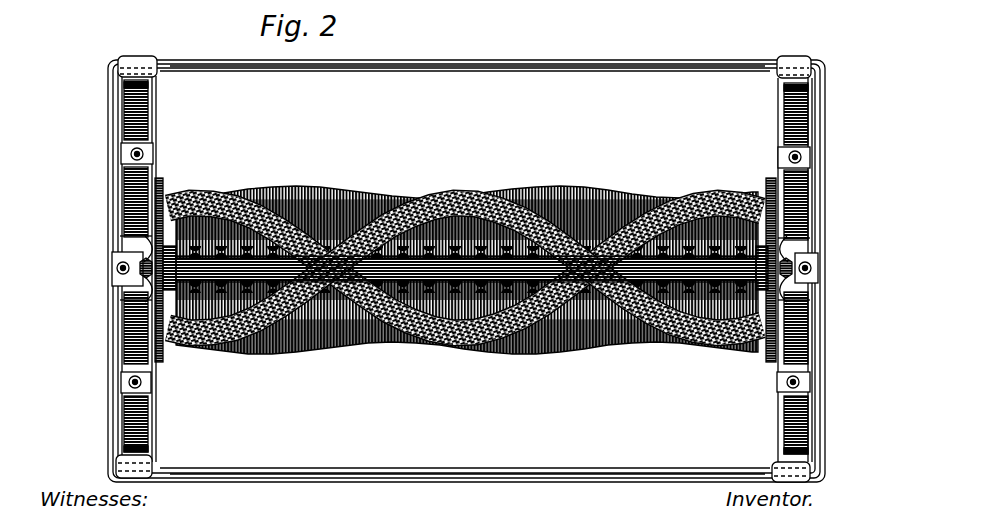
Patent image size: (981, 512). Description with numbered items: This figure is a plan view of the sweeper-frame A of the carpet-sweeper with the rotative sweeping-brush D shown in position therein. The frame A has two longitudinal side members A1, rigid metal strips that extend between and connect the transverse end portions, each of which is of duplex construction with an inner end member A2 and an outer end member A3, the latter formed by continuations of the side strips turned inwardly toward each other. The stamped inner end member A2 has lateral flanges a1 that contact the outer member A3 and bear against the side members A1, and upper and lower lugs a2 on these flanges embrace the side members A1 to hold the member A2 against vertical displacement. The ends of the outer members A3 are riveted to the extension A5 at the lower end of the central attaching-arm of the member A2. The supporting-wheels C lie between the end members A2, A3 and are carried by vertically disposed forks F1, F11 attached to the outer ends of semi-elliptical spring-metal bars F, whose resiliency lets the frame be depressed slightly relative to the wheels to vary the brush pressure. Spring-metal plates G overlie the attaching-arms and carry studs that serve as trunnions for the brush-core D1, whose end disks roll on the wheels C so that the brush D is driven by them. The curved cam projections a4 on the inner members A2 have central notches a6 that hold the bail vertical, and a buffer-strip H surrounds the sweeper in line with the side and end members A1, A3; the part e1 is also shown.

The metal frame A is at (466, 258).
The buffer-strip H is at (405, 60).
The longitudinal side member A1 is at (527, 71).
The inner end member A2 is at (154, 153).
The outer end member A3 is at (120, 183).
The extension A5 is at (120, 242).
The supporting-wheel C is at (128, 107).
The rotative sweeping-brush D is at (396, 200).
The brush-core D1 is at (465, 268).
The spring-metal bar F is at (130, 320).
The fork F1 is at (146, 140).
The fork F11 is at (150, 384).
The spring-metal plate G is at (112, 266).
The lateral flange a1 is at (802, 76).
The lug a2 is at (796, 58).
The curved cam projection a4 is at (130, 292).
The notch a6 is at (134, 254).
The cross piece e1 is at (796, 290).